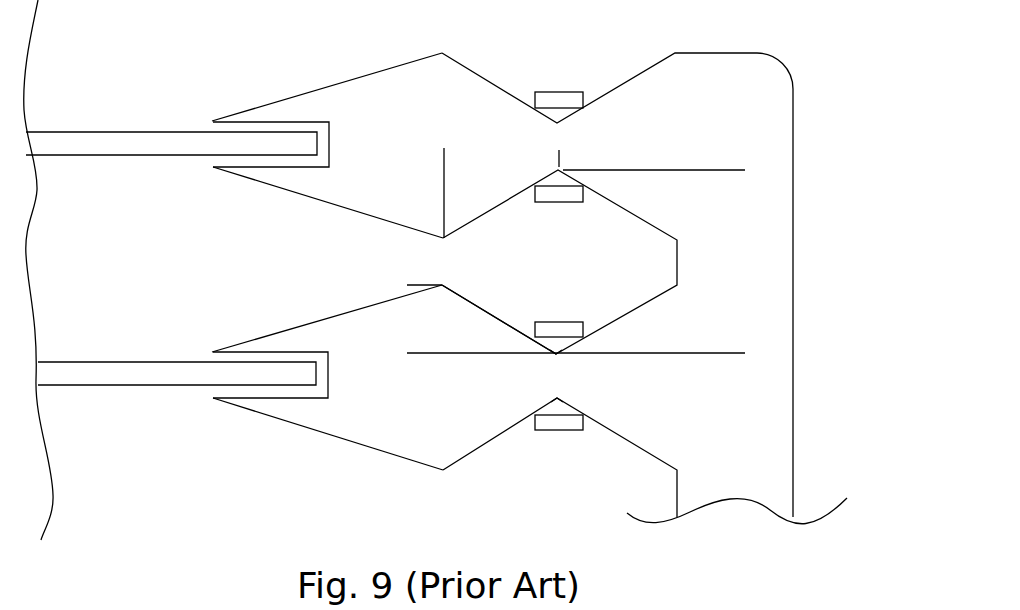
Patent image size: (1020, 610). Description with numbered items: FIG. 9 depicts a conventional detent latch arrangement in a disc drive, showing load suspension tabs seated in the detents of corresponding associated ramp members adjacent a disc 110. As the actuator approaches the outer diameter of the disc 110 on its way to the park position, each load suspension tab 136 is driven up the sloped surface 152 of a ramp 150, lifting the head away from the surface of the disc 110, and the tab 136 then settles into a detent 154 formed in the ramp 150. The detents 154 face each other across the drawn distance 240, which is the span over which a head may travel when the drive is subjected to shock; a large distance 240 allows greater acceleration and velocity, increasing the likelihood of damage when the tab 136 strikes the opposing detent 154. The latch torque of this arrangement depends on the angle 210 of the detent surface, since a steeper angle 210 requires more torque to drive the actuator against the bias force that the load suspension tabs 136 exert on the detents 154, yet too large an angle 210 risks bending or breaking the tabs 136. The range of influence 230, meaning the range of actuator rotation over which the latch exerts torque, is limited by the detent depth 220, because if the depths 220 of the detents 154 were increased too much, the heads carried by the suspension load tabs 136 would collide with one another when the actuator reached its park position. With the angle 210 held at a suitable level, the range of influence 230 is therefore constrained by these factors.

The disc 110 is at (105, 169).
The load suspension tab 136 is at (578, 100).
The ramp 150 is at (392, 133).
The sloped surface 152 is at (283, 87).
The detent 154 is at (561, 358).
The angle 210 is at (528, 293).
The detent depth 220 is at (412, 285).
The range of influence 230 is at (559, 158).
The distance 240 is at (725, 170).